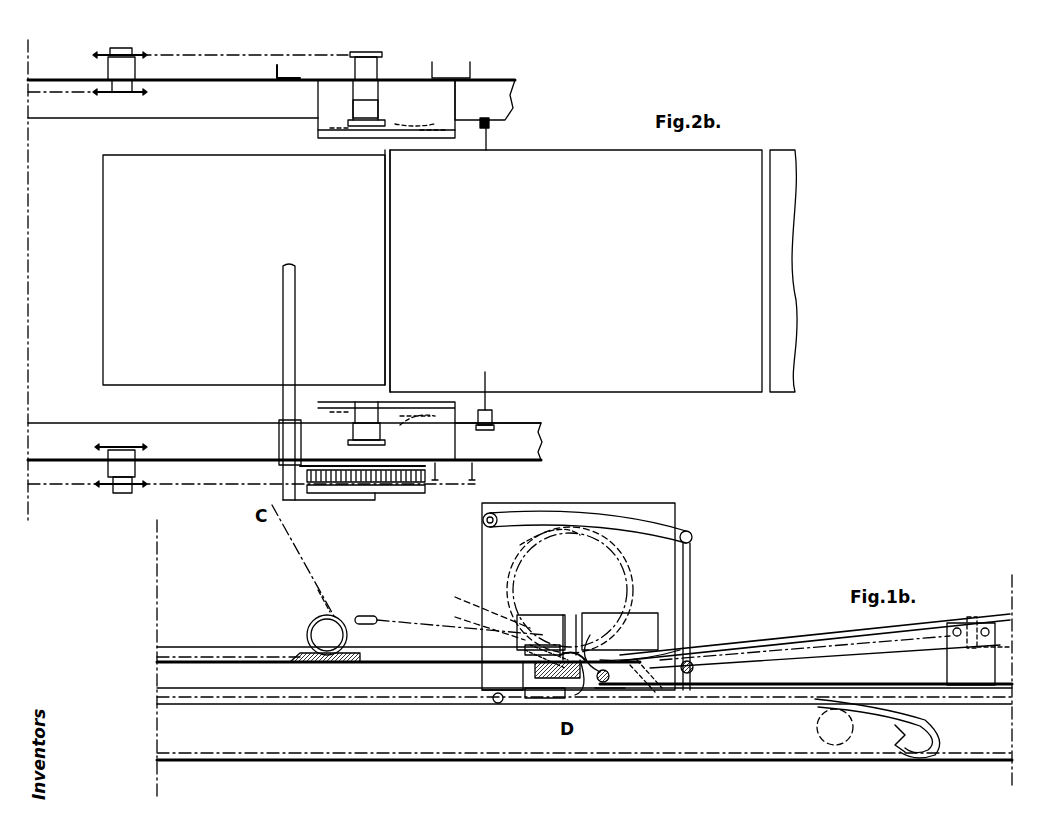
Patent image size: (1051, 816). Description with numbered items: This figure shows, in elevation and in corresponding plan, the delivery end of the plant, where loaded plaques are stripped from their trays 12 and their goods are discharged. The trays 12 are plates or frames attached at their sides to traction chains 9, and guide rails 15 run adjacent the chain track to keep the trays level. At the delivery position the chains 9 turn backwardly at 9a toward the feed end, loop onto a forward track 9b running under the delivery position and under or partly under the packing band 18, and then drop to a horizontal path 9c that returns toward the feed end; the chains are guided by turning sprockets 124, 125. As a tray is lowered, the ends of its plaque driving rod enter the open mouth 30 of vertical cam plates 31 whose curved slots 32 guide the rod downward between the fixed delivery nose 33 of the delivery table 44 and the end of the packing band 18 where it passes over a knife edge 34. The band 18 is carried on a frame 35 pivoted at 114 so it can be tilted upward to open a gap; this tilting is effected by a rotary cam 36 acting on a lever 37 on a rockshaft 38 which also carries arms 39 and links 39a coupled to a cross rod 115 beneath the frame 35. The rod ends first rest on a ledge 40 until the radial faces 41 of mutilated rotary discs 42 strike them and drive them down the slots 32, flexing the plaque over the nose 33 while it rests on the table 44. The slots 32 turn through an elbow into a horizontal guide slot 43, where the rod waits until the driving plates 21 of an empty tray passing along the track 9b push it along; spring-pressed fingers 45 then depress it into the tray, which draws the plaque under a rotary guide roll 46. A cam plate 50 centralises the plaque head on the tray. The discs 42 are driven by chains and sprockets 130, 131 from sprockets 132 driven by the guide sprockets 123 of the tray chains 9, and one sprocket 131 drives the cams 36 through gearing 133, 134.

In FIG. 2B, the traction chains 9 is at (56, 93).
In FIG. 1B, the backward turn of the chains 9a is at (214, 646).
In FIG. 1B, the forward track 9b is at (222, 703).
In FIG. 1B, the horizontal return path 9c is at (226, 762).
In FIG. 1B, the trays 12 is at (240, 640).
In FIG. 2B, the guide rails 15 is at (62, 108).
In FIG. 1B, the guide rails 15 is at (505, 762).
In FIG. 2B, the packing band 18 is at (593, 271).
In FIG. 1B, the packing band 18 is at (828, 632).
In FIG. 1B, the driving plates 21 is at (505, 692).
In FIG. 2B, the open mouth 30 is at (360, 142).
In FIG. 1B, the open mouth 30 is at (573, 612).
In FIG. 2B, the vertical cam plates 31 is at (405, 140).
In FIG. 1B, the vertical cam plates 31 is at (610, 640).
In FIG. 1B, the curved slots 32 is at (600, 650).
In FIG. 2B, the delivery nose 33 is at (391, 240).
In FIG. 1B, the delivery nose 33 is at (578, 695).
In FIG. 1B, the knife edge 34 is at (603, 684).
In FIG. 2B, the frame 35 is at (631, 150).
In FIG. 1B, the frame 35 is at (850, 648).
In FIG. 2B, the rotary cam 36 is at (390, 493).
In FIG. 1B, the rotary cam 36 is at (600, 535).
In FIG. 2B, the lever 37 is at (330, 494).
In FIG. 1B, the lever 37 is at (560, 522).
In FIG. 2B, the rockshaft 38 is at (296, 294).
In FIG. 1B, the rockshaft 38 is at (483, 520).
In FIG. 2B, the arms 39 is at (494, 418).
In FIG. 1B, the arms 39 is at (688, 530).
In FIG. 2B, the links 39a is at (490, 125).
In FIG. 1B, the links 39a is at (690, 560).
In FIG. 2B, the ledge 40 is at (370, 140).
In FIG. 1B, the ledge 40 is at (563, 640).
In FIG. 1B, the radial faces 41 is at (480, 607).
In FIG. 2B, the mutilated rotary discs 42 is at (340, 135).
In FIG. 1B, the mutilated rotary discs 42 is at (477, 624).
In FIG. 1B, the horizontal guide slot 43 is at (615, 690).
In FIG. 2B, the delivery table 44 is at (244, 270).
In FIG. 1B, the delivery table 44 is at (420, 660).
In FIG. 2B, the spring-pressed fingers 45 is at (445, 140).
In FIG. 1B, the spring-pressed fingers 45 is at (655, 692).
In FIG. 1B, the rotary guide roll 46 is at (618, 690).
In FIG. 2B, the cam plate 50 is at (396, 418).
In FIG. 1B, the pivot 114 is at (959, 628).
In FIG. 2B, the cross rod 115 is at (486, 130).
In FIG. 1B, the cross rod 115 is at (689, 660).
In FIG. 2B, the guide sprockets 123 is at (140, 92).
In FIG. 1B, the guide sprockets 123 is at (312, 618).
In FIG. 1B, the turning sprocket 124 is at (822, 722).
In FIG. 1B, the turning sprocket 125 is at (920, 728).
In FIG. 2B, the chains 130 is at (246, 62).
In FIG. 1B, the chains 130 is at (365, 616).
In FIG. 2B, the sprockets 131 is at (370, 58).
In FIG. 1B, the sprockets 131 is at (589, 627).
In FIG. 2B, the sprockets 132 is at (135, 60).
In FIG. 1B, the sprockets 132 is at (312, 597).
In FIG. 1B, the gearing 133 is at (545, 700).
In FIG. 2B, the gearing 134 is at (420, 470).
In FIG. 1B, the gearing 134 is at (618, 560).